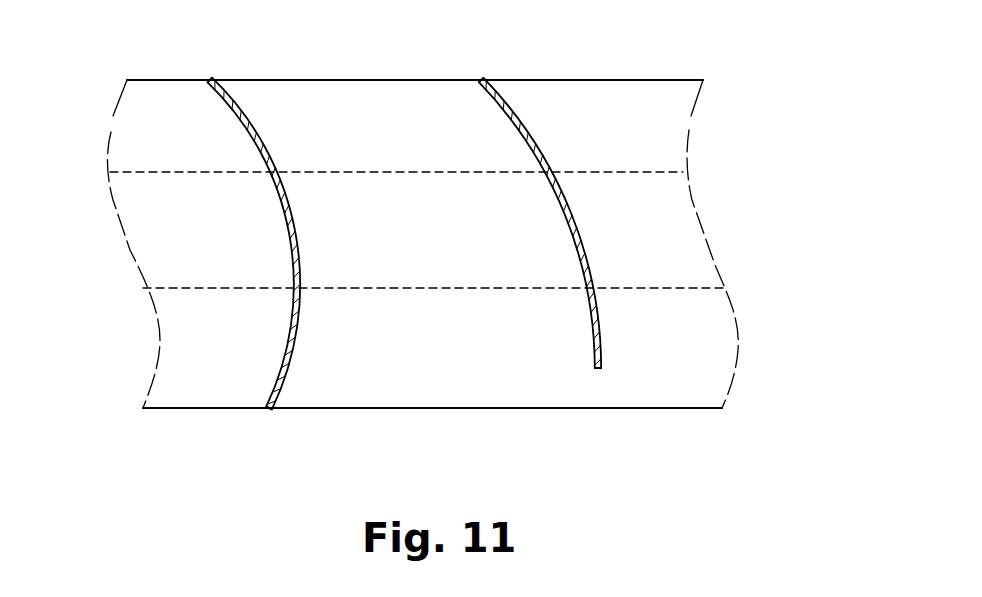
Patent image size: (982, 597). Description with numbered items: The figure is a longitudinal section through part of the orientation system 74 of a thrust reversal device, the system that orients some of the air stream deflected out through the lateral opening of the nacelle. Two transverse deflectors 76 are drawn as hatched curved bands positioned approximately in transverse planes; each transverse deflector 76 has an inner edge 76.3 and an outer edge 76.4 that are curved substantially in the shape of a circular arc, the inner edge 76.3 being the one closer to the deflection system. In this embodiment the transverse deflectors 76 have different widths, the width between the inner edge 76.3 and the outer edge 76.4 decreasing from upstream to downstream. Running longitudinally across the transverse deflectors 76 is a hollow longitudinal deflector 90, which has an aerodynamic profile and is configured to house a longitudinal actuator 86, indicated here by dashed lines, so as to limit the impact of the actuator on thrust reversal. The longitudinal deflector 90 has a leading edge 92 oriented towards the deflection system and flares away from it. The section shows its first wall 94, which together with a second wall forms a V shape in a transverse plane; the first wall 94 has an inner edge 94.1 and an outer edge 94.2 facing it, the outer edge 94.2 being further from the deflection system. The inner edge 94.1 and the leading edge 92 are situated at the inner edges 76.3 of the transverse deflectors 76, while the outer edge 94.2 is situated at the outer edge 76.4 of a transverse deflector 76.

The orientation system 74 is at (648, 46).
The transverse deflector 76 is at (586, 327).
The inner edge 76.3 is at (267, 408).
The outer edge 76.4 is at (210, 80).
The longitudinal actuator 86 is at (172, 170).
The longitudinal deflector 90 is at (694, 383).
The leading edge 92 is at (180, 408).
The first wall 94 is at (660, 126).
The inner edge 94.1 is at (683, 408).
The outer edge 94.2 is at (675, 80).